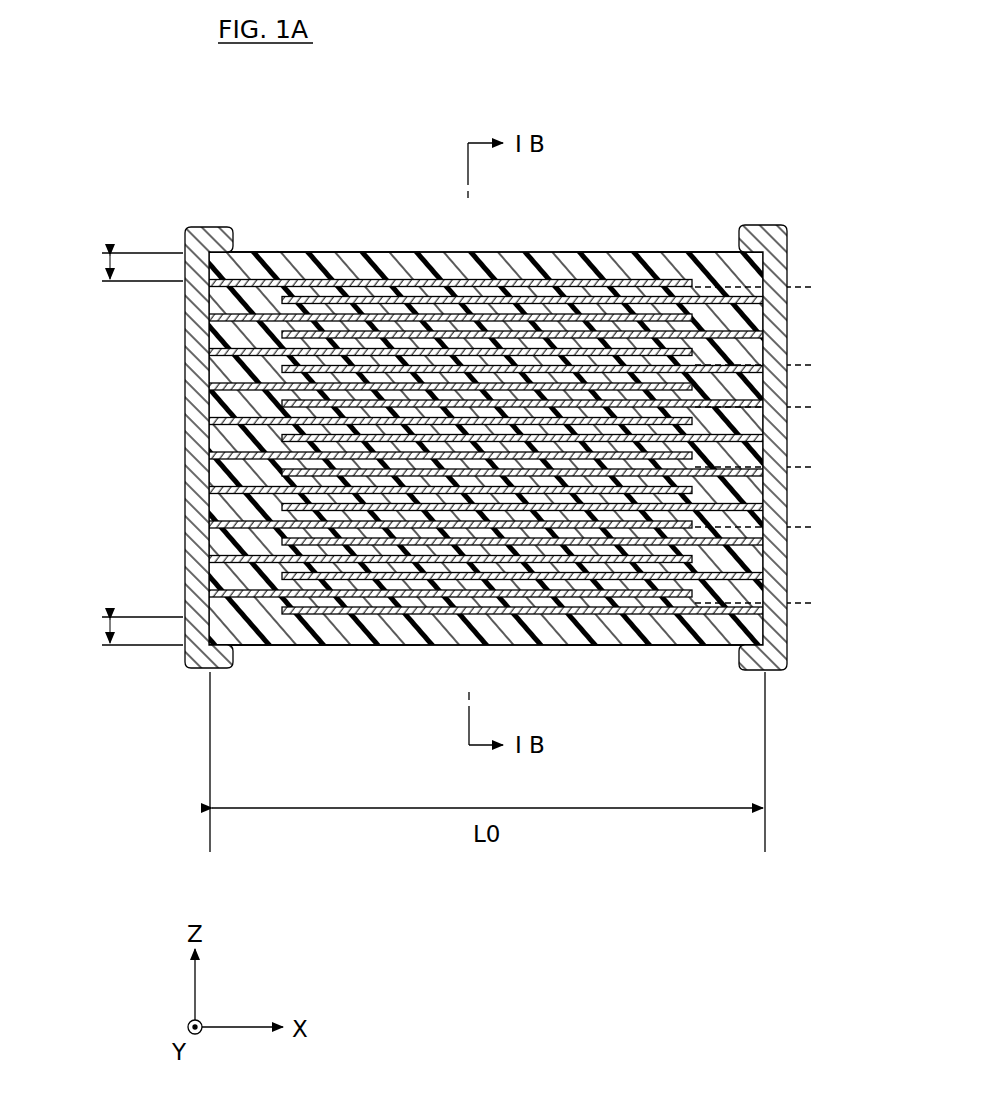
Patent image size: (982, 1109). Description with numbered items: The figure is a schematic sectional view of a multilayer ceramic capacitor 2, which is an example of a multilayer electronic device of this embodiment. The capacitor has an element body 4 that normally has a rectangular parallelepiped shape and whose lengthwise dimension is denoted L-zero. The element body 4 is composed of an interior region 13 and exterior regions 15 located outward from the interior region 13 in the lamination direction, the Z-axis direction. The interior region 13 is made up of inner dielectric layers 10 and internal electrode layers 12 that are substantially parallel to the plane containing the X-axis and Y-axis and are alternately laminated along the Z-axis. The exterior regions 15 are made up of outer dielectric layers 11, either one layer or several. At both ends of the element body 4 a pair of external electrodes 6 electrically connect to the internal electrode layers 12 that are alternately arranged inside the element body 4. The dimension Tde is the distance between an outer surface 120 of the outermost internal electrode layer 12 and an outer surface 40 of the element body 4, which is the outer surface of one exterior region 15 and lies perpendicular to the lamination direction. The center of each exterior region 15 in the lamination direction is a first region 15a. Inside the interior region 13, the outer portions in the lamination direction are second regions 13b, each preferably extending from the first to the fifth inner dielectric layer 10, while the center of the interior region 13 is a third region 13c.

The multilayer ceramic capacitor 2 is at (462, 468).
The element body 4 is at (462, 454).
The external electrodes 6 is at (763, 225).
The inner dielectric layers 10 is at (396, 285).
The outer dielectric layers 11 is at (612, 258).
The internal electrode layers 12 is at (566, 272).
The interior region 13 is at (441, 443).
The second regions 13b is at (805, 289).
The third region 13c is at (805, 409).
The exterior regions 15 is at (172, 253).
The first regions 15a is at (790, 255).
The outer surface of the element body 40 is at (686, 250).
The outer surface of the outermost internal electrode layer 120 is at (299, 265).